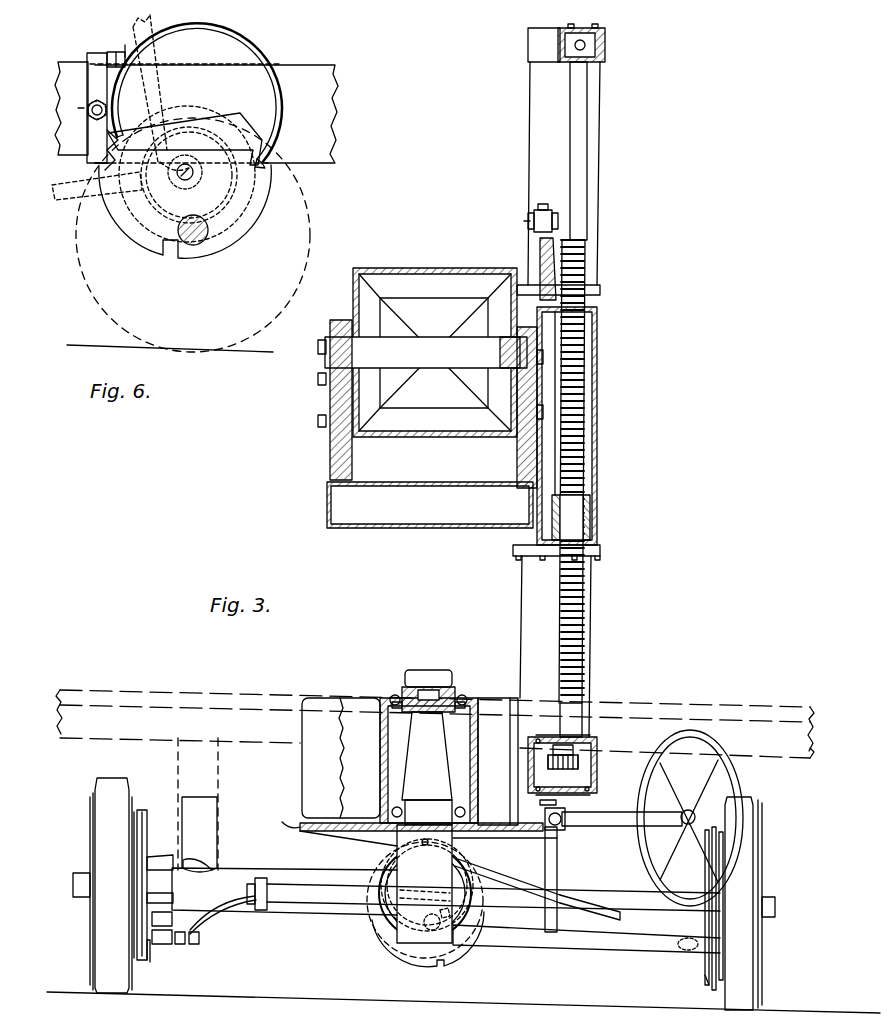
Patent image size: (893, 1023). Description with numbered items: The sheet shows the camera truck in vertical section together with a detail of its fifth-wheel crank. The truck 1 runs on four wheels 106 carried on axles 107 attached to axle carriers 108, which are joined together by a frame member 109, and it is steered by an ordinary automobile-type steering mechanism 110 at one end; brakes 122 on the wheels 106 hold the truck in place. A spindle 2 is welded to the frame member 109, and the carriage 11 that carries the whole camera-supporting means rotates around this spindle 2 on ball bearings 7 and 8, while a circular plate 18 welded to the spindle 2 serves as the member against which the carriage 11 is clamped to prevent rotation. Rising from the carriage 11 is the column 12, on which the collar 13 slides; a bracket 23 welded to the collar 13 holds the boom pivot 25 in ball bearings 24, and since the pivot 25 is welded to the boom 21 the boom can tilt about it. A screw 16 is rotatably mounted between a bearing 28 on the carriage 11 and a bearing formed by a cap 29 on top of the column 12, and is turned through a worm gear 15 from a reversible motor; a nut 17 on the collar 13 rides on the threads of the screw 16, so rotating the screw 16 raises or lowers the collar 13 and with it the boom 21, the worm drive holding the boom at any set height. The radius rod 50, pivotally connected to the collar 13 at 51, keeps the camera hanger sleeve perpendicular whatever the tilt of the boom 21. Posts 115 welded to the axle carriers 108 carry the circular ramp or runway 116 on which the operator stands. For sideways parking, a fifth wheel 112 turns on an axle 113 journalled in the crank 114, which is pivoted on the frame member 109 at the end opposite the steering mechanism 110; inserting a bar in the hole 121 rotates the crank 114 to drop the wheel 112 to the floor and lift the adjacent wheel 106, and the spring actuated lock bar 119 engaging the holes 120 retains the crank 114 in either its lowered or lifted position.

In FIG. 3, the truck 1 is at (278, 931).
In FIG. 3, the spindle 2 is at (436, 770).
In FIG. 3, the ball bearing 7 is at (398, 805).
In FIG. 3, the ball bearing 8 is at (408, 708).
In FIG. 3, the carriage 11 is at (470, 698).
In FIG. 3, the column 12 is at (522, 586).
In FIG. 3, the collar 13 is at (598, 428).
In FIG. 3, the worm gear 15 is at (590, 760).
In FIG. 3, the screw 16 is at (580, 612).
In FIG. 3, the nut 17 is at (592, 503).
In FIG. 3, the circular plate 18 is at (298, 825).
In FIG. 3, the boom 21 is at (466, 272).
In FIG. 3, the bracket 23 is at (438, 529).
In FIG. 3, the ball bearings 24 is at (330, 365).
In FIG. 3, the boom pivot 25 is at (452, 358).
In FIG. 3, the bearing 28 is at (597, 772).
In FIG. 3, the cap 29 is at (603, 48).
In FIG. 3, the radius rod 50 is at (547, 204).
In FIG. 3, the pivotal connection 51 is at (526, 221).
In FIG. 3, the wheel 106 is at (106, 778).
In FIG. 3, the axle 107 is at (155, 840).
In FIG. 6, the axle carrier 108 is at (325, 108).
In FIG. 3, the axle carrier 108 is at (332, 905).
In FIG. 6, the frame member 109 is at (258, 55).
In FIG. 3, the frame member 109 is at (392, 872).
In FIG. 3, the steering mechanism 110 is at (718, 750).
In FIG. 6, the fifth wheel 112 is at (308, 232).
In FIG. 3, the fifth wheel 112 is at (372, 930).
In FIG. 6, the axle 113 is at (178, 224).
In FIG. 6, the crank 114 is at (232, 232).
In FIG. 3, the crank 114 is at (425, 965).
In FIG. 3, the post 115 is at (205, 807).
In FIG. 3, the ramp or runway 116 is at (218, 690).
In FIG. 6, the spring actuated lock bar 119 is at (87, 63).
In FIG. 6, the holes 120 is at (105, 165).
In FIG. 3, the holes 120 is at (446, 963).
In FIG. 6, the hole 121 is at (198, 118).
In FIG. 3, the brakes 122 is at (140, 950).